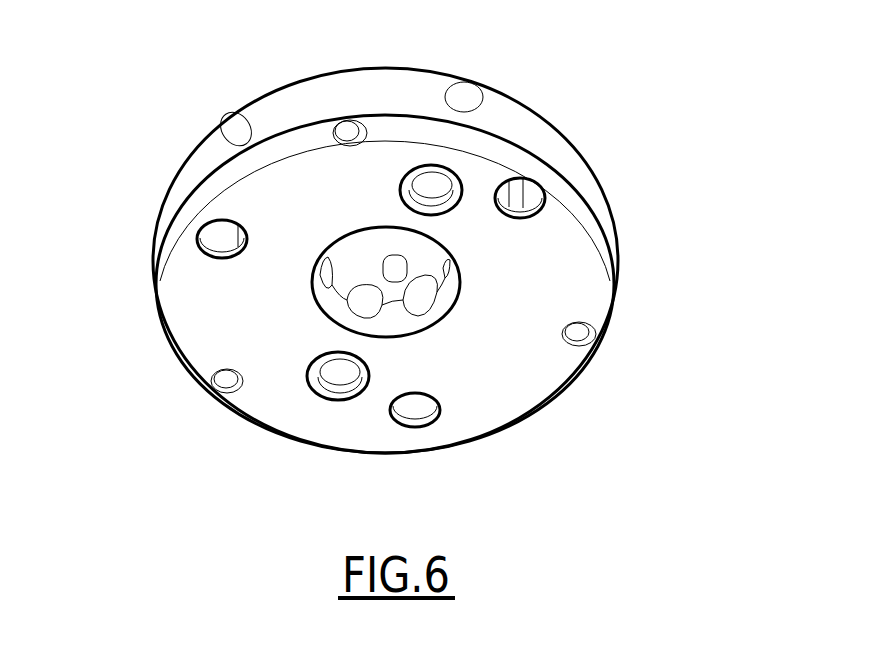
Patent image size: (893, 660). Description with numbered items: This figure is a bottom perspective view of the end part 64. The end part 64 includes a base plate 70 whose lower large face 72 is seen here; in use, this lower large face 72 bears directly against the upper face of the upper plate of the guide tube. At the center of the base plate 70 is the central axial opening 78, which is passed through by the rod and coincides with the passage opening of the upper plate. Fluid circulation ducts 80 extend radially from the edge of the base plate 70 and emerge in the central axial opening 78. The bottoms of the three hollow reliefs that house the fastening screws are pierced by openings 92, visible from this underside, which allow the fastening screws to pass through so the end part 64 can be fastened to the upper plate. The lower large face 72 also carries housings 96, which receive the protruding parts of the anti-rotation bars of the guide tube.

The end part 64 is at (578, 95).
The base plate 70 is at (627, 240).
The lower large face 72 is at (272, 380).
The central axial opening 78 is at (423, 298).
The ducts 80 is at (233, 130).
The openings 92 is at (518, 213).
The housings 96 is at (407, 192).